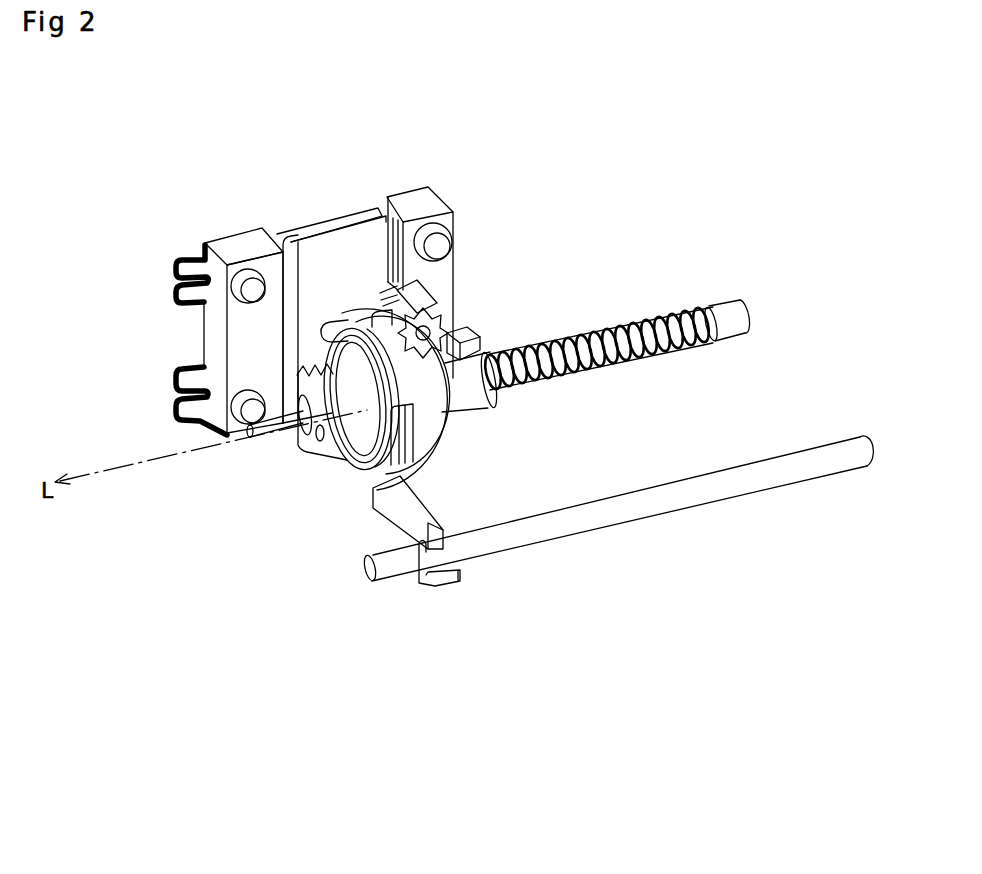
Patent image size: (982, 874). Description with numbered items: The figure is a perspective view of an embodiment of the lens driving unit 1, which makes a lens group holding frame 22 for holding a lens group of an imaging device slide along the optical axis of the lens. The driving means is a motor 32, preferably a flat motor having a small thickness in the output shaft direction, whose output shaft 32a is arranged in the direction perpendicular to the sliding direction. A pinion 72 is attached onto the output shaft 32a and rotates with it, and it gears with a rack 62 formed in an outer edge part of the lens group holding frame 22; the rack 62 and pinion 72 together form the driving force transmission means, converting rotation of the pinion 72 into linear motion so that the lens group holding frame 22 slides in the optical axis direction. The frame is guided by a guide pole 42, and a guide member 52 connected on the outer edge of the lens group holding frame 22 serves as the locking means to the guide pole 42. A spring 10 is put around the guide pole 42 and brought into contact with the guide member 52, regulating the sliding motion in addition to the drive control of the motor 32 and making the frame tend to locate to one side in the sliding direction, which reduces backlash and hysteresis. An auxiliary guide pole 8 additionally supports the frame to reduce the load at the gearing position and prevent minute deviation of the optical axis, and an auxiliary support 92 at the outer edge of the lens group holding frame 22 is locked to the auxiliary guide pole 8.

The lens driving unit 1 is at (168, 124).
The motor 32 is at (345, 258).
The output shaft 32a is at (453, 313).
The pinion 72 is at (428, 297).
The rack 62 is at (477, 340).
The guide member 52 is at (478, 418).
The guide pole 42 is at (740, 332).
The spring 10 is at (707, 305).
The lens group holding frame 22 is at (353, 470).
The auxiliary guide pole 8 is at (560, 530).
The auxiliary support 92 is at (447, 580).